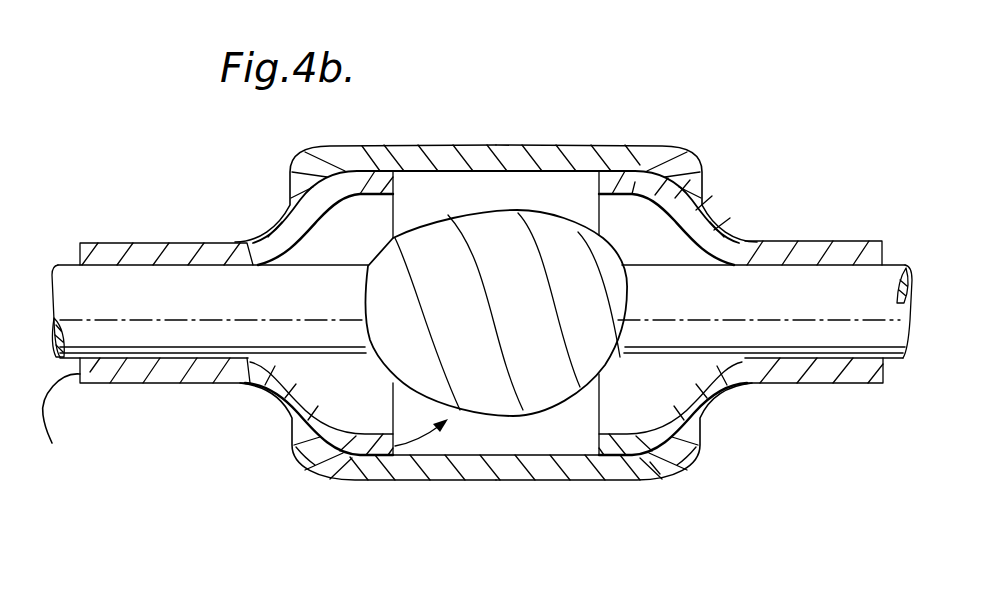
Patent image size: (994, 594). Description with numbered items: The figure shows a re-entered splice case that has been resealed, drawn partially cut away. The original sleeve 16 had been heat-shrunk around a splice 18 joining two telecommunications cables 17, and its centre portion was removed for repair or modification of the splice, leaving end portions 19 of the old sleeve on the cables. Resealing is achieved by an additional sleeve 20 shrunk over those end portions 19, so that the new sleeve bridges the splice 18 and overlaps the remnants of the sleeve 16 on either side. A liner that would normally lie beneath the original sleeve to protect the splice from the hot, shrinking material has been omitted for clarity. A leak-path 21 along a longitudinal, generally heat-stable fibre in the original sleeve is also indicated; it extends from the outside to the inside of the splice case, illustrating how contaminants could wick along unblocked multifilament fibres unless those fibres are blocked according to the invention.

The sleeve 16 is at (226, 230).
The telecommunications cables 17 is at (70, 266).
The splice 18 is at (500, 227).
The end portions 19 is at (262, 392).
The additional sleeve 20 is at (413, 150).
The leak-path 21 is at (50, 395).